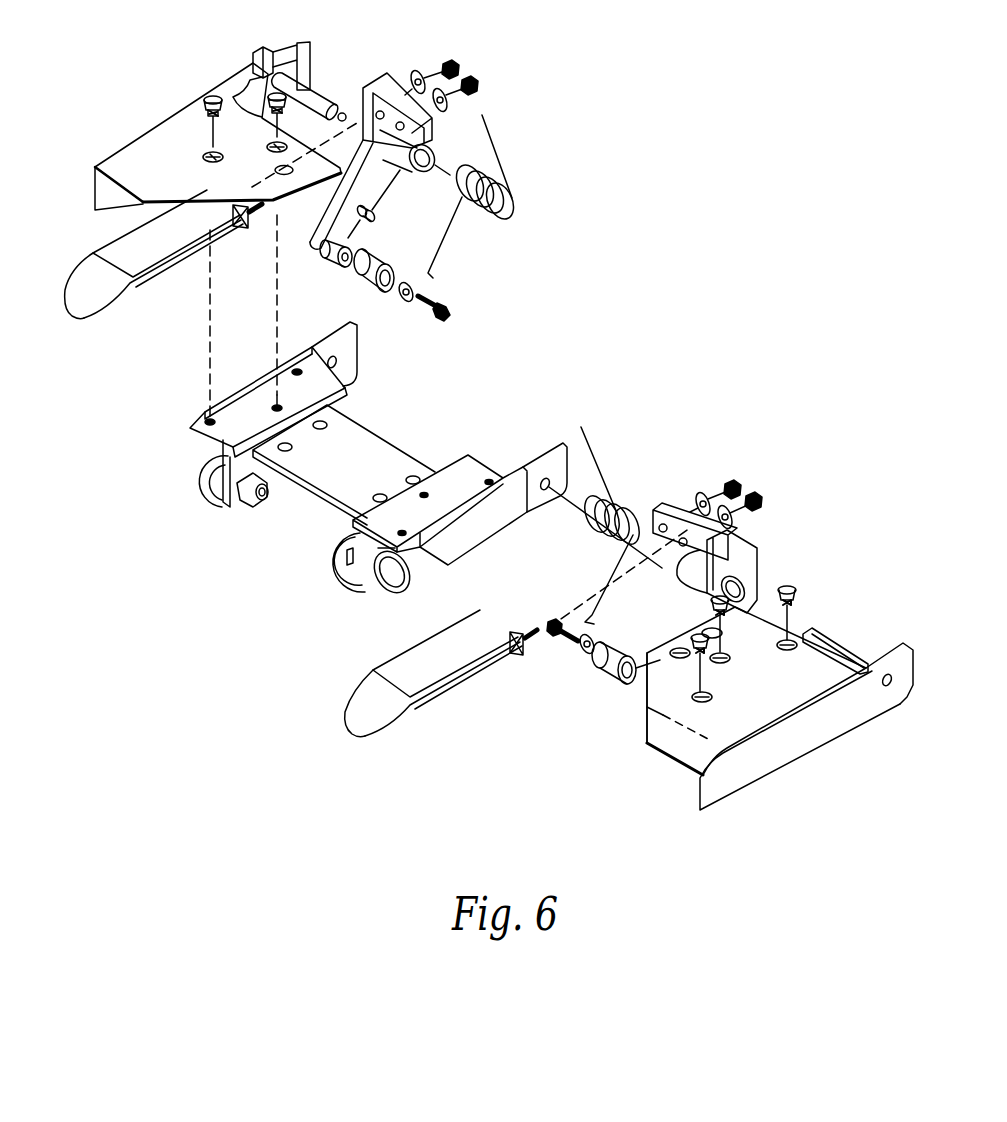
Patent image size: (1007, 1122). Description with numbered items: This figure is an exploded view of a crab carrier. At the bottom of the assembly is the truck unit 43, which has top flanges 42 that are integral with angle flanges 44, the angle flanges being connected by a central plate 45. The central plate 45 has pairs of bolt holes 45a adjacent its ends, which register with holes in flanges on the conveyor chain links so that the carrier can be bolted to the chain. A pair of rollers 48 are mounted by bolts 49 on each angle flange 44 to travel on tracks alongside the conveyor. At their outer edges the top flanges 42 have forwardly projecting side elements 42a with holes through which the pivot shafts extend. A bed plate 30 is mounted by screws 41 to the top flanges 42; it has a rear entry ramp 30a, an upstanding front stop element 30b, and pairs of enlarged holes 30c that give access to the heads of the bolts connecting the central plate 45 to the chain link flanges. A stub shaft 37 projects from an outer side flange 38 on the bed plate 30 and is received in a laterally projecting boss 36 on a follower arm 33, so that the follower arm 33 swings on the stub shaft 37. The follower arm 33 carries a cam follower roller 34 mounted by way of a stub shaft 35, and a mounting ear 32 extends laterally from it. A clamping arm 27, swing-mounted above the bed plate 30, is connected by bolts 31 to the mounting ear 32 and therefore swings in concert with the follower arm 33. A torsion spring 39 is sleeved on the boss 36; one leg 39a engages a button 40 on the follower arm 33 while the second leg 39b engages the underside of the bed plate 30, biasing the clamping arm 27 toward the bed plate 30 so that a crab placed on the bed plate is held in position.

The clamping arm 27 is at (125, 256).
The bed plate 30 is at (172, 130).
The rear entry ramp 30a is at (117, 160).
The upstanding front stop element 30b is at (820, 633).
The enlarged holes 30c is at (680, 653).
The bolts 31 is at (550, 633).
The mounting ear 32 is at (450, 112).
The follower arm 33 is at (323, 207).
The cam follower roller 34 is at (377, 289).
The stub shaft 35 is at (338, 262).
The boss 36 is at (393, 160).
The stub shaft 37 is at (326, 90).
The outer side flange 38 is at (298, 50).
The torsion spring 39 is at (513, 200).
The spring leg 39a is at (447, 258).
The second spring leg 39b is at (495, 150).
The button 40 is at (372, 220).
The screws 41 is at (216, 95).
The top flanges 42 is at (222, 433).
The side elements 42a is at (342, 355).
The truck unit 43 is at (404, 466).
The angle flanges 44 is at (340, 390).
The central plate 45 is at (363, 452).
The bolt holes 45a is at (415, 478).
The rollers 48 is at (217, 485).
The bolts 49 is at (252, 497).